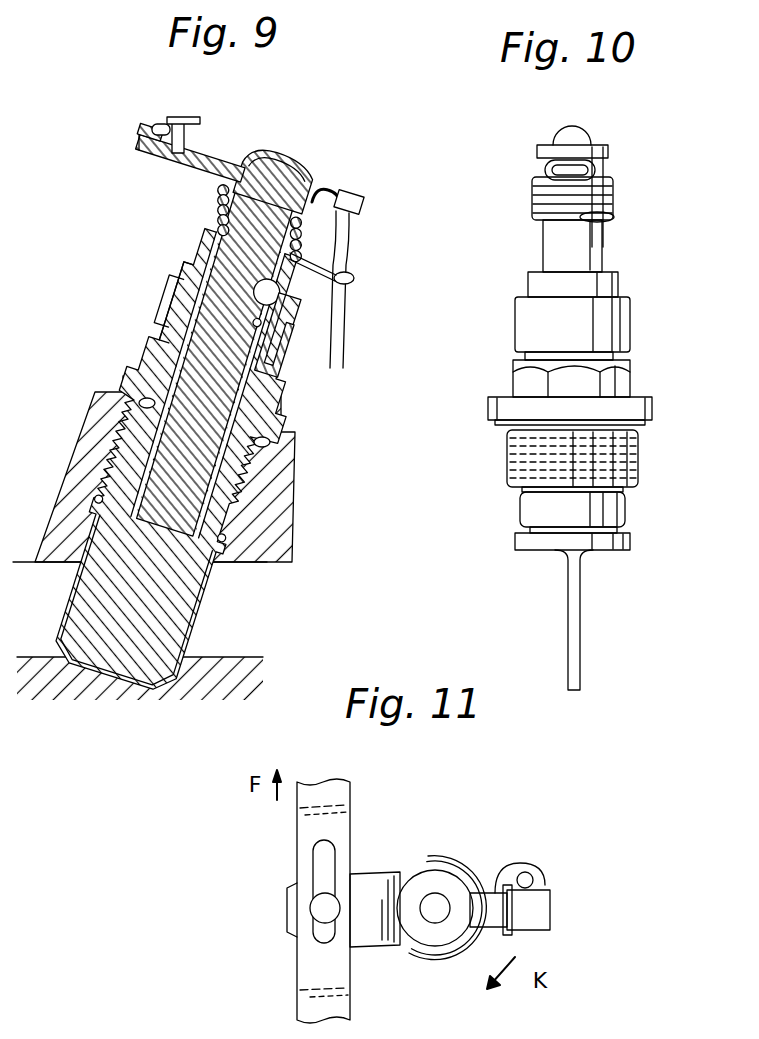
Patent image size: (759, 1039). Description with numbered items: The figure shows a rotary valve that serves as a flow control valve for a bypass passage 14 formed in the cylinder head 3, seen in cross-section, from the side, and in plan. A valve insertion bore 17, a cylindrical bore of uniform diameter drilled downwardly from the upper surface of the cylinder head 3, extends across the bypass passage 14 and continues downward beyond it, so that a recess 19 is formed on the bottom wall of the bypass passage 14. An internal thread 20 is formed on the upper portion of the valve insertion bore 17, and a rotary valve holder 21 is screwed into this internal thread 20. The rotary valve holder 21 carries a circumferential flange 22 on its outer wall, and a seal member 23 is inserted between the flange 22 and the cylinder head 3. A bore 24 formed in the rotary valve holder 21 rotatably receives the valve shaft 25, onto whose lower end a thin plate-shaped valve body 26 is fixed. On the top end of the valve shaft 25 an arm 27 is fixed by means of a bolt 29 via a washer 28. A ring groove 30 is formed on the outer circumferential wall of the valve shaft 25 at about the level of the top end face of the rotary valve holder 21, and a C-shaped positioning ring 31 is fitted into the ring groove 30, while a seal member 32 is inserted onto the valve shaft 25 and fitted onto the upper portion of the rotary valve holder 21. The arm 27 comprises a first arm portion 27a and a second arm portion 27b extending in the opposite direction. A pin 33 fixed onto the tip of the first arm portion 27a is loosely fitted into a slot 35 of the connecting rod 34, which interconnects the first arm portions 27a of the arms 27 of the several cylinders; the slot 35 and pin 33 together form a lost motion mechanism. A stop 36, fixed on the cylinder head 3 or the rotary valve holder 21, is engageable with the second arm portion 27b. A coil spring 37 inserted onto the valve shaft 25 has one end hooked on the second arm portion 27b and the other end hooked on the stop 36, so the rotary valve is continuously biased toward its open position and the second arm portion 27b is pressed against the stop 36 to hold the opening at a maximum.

In FIG. 9, the cylinder head 3 is at (83, 530).
In FIG. 9, the bypass passage 14 is at (235, 600).
In FIG. 9, the valve insertion bore 17 is at (250, 540).
In FIG. 9, the recess 19 is at (130, 677).
In FIG. 9, the internal thread 20 is at (247, 507).
In FIG. 9, the rotary valve holder 21 is at (262, 400).
In FIG. 10, the rotary valve holder 21 is at (625, 378).
In FIG. 9, the circumferential flange 22 is at (290, 442).
In FIG. 10, the circumferential flange 22 is at (490, 410).
In FIG. 9, the seal member 23 is at (272, 470).
In FIG. 9, the bore 24 is at (147, 398).
In FIG. 9, the valve shaft 25 is at (235, 362).
In FIG. 10, the valve shaft 25 is at (545, 248).
In FIG. 9, the valve body 26 is at (83, 673).
In FIG. 10, the valve body 26 is at (580, 640).
In FIG. 9, the arm 27 is at (222, 158).
In FIG. 11, the arm 27 is at (378, 880).
In FIG. 9, the first arm portion 27a is at (134, 143).
In FIG. 11, the first arm portion 27a is at (375, 948).
In FIG. 9, the second arm portion 27b is at (365, 205).
In FIG. 10, the second arm portion 27b is at (545, 170).
In FIG. 11, the second arm portion 27b is at (545, 912).
In FIG. 9, the washer 28 is at (312, 172).
In FIG. 10, the washer 28 is at (540, 150).
In FIG. 11, the washer 28 is at (428, 882).
In FIG. 9, the bolt 29 is at (280, 155).
In FIG. 10, the bolt 29 is at (580, 135).
In FIG. 11, the bolt 29 is at (445, 905).
In FIG. 9, the ring groove 30 is at (275, 296).
In FIG. 9, the C-shaped positioning ring 31 is at (282, 322).
In FIG. 9, the seal member 32 is at (198, 272).
In FIG. 10, the seal member 32 is at (625, 320).
In FIG. 9, the pin 33 is at (190, 120).
In FIG. 11, the pin 33 is at (318, 905).
In FIG. 9, the connecting rod 34 is at (148, 130).
In FIG. 11, the connecting rod 34 is at (300, 825).
In FIG. 9, the slot 35 is at (158, 122).
In FIG. 11, the slot 35 is at (320, 858).
In FIG. 9, the stop 36 is at (350, 318).
In FIG. 10, the stop 36 is at (605, 165).
In FIG. 11, the stop 36 is at (535, 878).
In FIG. 9, the coil spring 37 is at (215, 210).
In FIG. 10, the coil spring 37 is at (533, 195).
In FIG. 11, the coil spring 37 is at (445, 955).